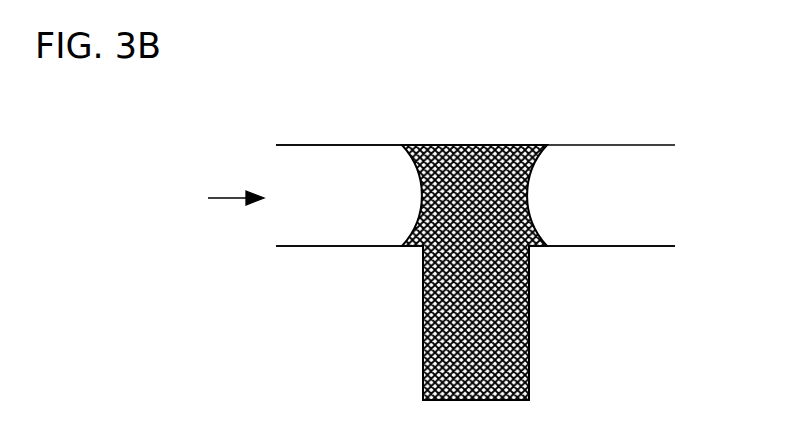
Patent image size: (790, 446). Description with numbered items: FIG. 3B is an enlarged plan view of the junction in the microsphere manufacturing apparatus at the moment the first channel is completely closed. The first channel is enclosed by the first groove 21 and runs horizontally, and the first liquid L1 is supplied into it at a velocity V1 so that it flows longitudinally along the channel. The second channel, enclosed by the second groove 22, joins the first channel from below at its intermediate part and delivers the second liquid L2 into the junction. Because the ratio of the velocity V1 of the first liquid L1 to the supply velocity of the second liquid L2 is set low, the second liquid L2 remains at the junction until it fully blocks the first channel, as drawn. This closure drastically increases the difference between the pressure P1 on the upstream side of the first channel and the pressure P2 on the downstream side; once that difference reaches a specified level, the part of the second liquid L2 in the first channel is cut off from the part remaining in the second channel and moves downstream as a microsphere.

The first groove 21 is at (612, 145).
The second groove 22 is at (423, 332).
The first liquid L1 is at (332, 153).
The second liquid L2 is at (493, 147).
The pressure at an upstream side of the first channel P1 is at (349, 211).
The pressure at a downstream side of the first channel P2 is at (602, 212).
The velocity of the first liquid V1 is at (236, 182).